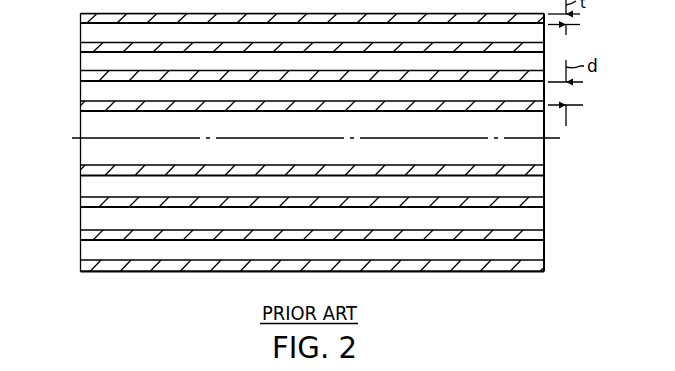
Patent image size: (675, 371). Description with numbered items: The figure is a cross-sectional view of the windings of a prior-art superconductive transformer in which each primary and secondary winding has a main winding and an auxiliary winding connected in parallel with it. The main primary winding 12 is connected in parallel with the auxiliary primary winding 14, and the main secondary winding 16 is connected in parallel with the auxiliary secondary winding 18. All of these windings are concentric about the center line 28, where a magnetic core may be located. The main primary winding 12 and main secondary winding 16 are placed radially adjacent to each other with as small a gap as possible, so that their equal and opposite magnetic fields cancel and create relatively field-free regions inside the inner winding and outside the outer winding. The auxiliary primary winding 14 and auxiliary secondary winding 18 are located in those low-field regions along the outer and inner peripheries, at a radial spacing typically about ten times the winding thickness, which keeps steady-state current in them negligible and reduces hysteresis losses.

The auxiliary primary winding 14 is at (80, 17).
The main primary winding 12 is at (80, 47).
The main secondary winding 16 is at (80, 74).
The auxiliary secondary winding 18 is at (80, 106).
The center line 28 is at (525, 139).